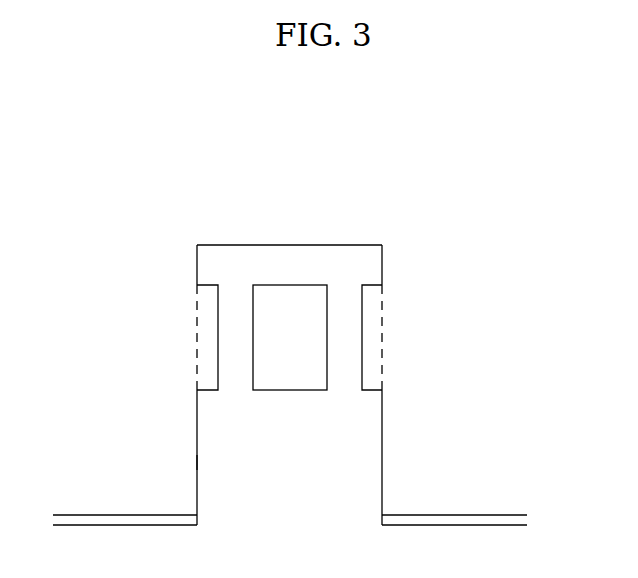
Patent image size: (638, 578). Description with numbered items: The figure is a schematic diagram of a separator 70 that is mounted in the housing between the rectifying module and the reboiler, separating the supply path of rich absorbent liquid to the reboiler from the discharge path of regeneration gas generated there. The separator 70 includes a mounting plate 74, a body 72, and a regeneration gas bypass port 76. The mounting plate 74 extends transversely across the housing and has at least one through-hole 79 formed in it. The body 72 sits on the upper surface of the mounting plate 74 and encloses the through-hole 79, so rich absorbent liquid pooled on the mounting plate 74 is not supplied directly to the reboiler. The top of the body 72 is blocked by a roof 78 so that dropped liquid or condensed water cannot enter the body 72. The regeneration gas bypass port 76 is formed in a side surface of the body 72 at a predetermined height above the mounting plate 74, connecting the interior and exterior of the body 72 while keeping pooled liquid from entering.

The separator 70 is at (448, 365).
The body 72 is at (383, 458).
The mounting plate 74 is at (123, 513).
The regeneration gas bypass port 76 is at (287, 313).
The roof 78 is at (342, 245).
The through-hole 79 is at (283, 527).